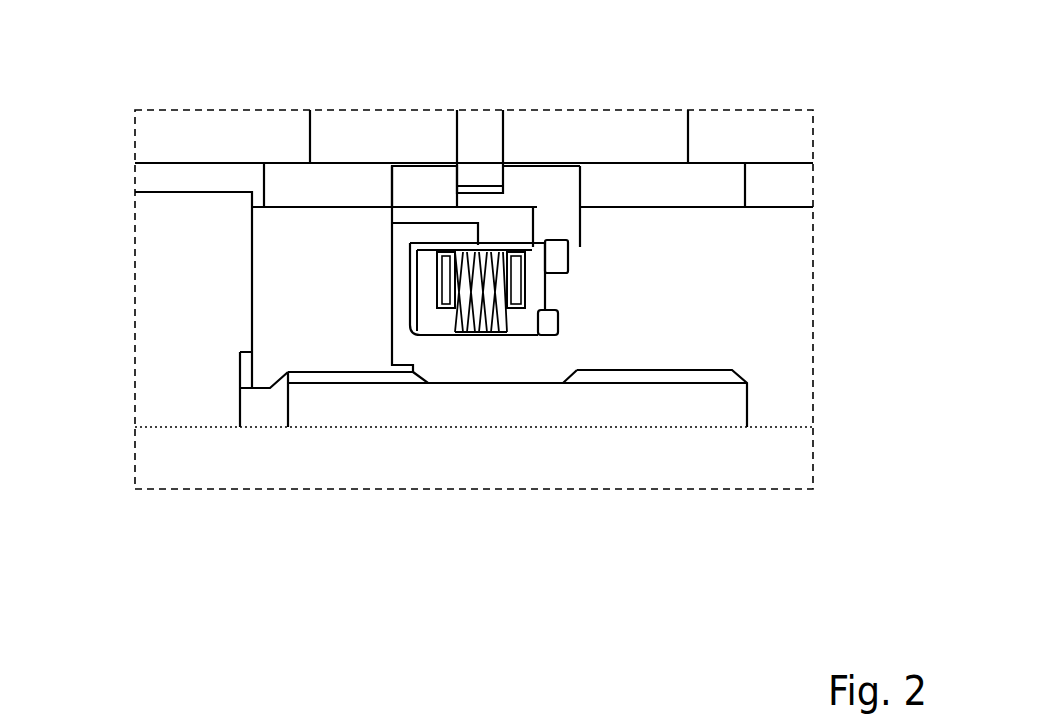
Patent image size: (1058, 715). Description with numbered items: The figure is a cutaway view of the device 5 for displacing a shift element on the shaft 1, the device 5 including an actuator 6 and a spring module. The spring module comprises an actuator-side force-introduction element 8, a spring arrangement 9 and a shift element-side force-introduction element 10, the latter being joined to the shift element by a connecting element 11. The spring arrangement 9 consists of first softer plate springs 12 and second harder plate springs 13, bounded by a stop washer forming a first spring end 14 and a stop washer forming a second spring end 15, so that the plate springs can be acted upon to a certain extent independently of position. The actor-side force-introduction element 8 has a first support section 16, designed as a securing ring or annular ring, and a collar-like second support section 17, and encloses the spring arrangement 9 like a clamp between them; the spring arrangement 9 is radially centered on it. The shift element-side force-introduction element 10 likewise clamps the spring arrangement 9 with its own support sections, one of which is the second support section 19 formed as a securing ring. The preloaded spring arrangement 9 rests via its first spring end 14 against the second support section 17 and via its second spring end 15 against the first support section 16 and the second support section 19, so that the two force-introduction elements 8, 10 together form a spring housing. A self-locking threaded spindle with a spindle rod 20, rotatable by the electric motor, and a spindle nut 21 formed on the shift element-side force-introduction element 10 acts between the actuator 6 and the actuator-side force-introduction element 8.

The shaft 1 is at (208, 130).
The device 5 is at (616, 284).
The actuator 6 is at (153, 272).
The actuator-side force-introduction element 8 is at (532, 355).
The spring arrangement 9 is at (493, 241).
The shift element-side force-introduction element 10 is at (410, 187).
The connecting element 11 is at (485, 120).
The first softer plate springs 12 is at (480, 346).
The second harder plate springs 13 is at (512, 253).
The first spring end 14 is at (432, 324).
The second spring end 15 is at (537, 263).
The first support section 16 is at (562, 338).
The second support section 17 is at (400, 307).
The second support section 19 is at (560, 267).
The spindle rod 20 is at (308, 415).
The spindle nut 21 is at (412, 353).